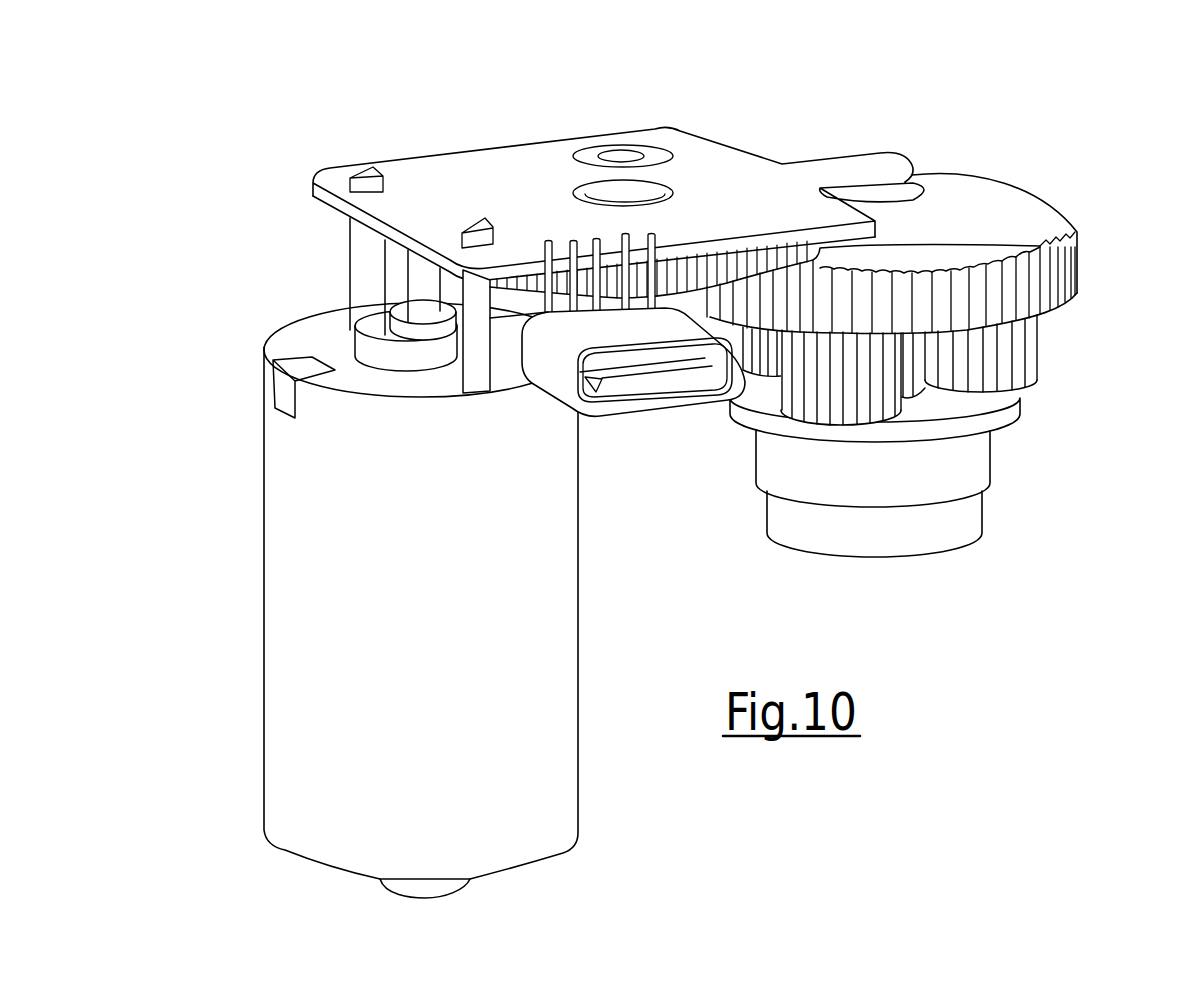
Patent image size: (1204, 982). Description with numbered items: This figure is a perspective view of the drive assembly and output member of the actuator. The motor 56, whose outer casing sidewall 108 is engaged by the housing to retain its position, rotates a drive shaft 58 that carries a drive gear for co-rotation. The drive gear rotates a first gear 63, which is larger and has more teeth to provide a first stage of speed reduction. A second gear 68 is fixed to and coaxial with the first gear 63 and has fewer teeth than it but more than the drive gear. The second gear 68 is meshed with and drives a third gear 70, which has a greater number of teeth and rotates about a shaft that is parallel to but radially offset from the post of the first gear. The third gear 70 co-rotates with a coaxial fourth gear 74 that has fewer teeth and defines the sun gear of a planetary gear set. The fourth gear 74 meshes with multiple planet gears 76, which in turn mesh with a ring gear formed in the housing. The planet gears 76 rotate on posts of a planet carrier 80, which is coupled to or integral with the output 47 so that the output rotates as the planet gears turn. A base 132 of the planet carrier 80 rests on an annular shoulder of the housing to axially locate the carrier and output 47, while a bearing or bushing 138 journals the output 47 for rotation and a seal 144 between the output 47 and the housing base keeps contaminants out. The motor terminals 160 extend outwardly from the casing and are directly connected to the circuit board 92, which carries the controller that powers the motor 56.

The circuit board 92 is at (487, 175).
The terminals 160 is at (367, 285).
The drive shaft 58 is at (422, 303).
The third gear 70 is at (1033, 230).
The first gear 63 is at (880, 246).
The planet gears 76 is at (813, 390).
The fourth gear 74 is at (910, 372).
The base of the planet carrier 132 is at (1000, 415).
The bearing or bushing 138 is at (977, 464).
The seal 144 is at (945, 555).
The planet carrier 80 is at (877, 455).
The output 47 is at (1006, 518).
The second gear 68 is at (700, 305).
The motor 56 is at (257, 601).
The sidewall 108 is at (297, 673).